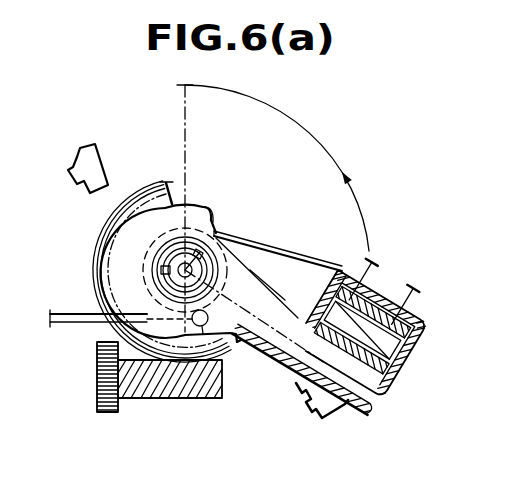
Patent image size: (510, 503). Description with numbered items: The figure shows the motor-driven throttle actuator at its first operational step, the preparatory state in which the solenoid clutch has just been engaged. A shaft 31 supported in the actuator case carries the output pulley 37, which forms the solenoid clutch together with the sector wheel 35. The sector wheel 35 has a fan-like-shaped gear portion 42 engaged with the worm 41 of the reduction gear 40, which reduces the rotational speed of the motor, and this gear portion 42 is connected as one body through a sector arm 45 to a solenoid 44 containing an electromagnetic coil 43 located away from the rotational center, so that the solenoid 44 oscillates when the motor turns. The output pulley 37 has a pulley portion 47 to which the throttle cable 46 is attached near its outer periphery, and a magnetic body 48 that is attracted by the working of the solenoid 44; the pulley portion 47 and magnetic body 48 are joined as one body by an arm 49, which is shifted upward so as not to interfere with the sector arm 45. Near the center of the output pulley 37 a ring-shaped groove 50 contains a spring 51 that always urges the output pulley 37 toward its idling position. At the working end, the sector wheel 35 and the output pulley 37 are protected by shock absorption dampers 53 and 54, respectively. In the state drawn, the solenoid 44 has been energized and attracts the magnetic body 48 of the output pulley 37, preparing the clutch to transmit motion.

The shaft 31 is at (207, 232).
The sector wheel 35 is at (241, 350).
The output pulley 37 is at (290, 300).
The reduction gear 40 is at (139, 408).
The worm 41 is at (191, 397).
The gear portion 42 is at (95, 261).
The electromagnetic coil 43 is at (412, 345).
The solenoid 44 is at (408, 362).
The sector arm 45 is at (268, 255).
The throttle cable 46 is at (63, 324).
The pulley portion 47 is at (125, 282).
The magnetic body 48 is at (370, 404).
The arm 49 is at (233, 272).
The ring-shaped groove 50 is at (152, 247).
The spring 51 is at (213, 240).
The shock absorption damper 53 is at (88, 148).
The shock absorption damper 54 is at (296, 386).